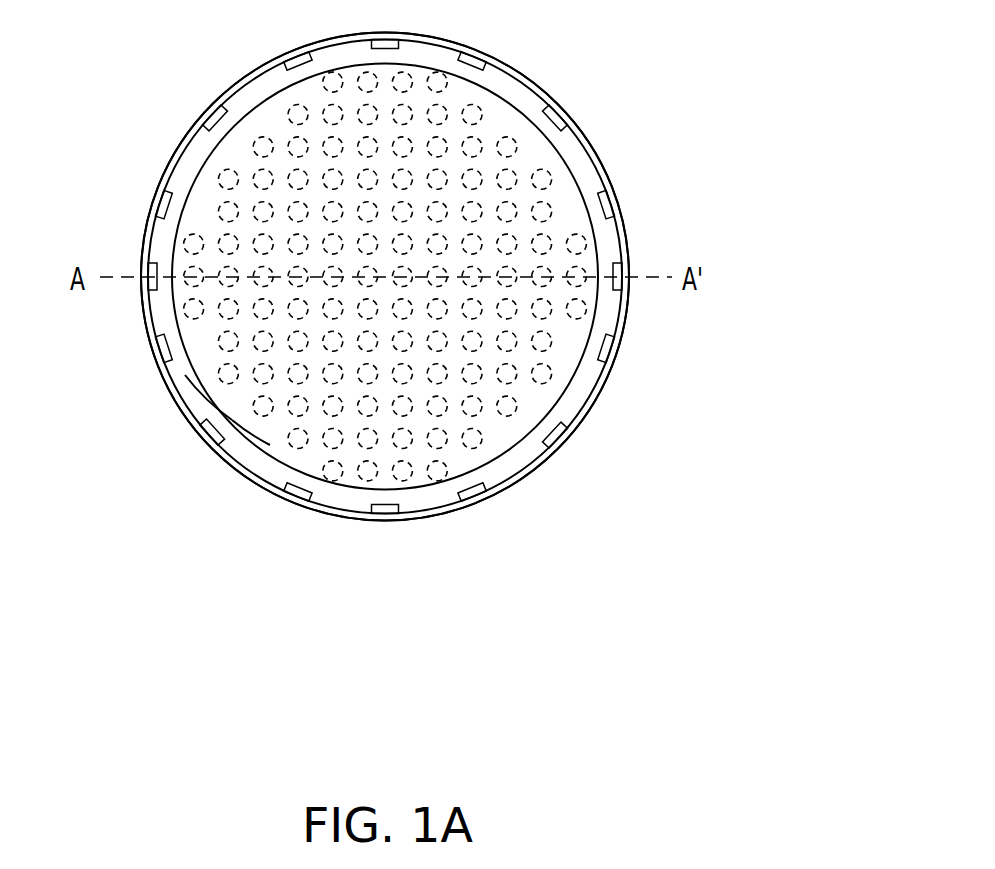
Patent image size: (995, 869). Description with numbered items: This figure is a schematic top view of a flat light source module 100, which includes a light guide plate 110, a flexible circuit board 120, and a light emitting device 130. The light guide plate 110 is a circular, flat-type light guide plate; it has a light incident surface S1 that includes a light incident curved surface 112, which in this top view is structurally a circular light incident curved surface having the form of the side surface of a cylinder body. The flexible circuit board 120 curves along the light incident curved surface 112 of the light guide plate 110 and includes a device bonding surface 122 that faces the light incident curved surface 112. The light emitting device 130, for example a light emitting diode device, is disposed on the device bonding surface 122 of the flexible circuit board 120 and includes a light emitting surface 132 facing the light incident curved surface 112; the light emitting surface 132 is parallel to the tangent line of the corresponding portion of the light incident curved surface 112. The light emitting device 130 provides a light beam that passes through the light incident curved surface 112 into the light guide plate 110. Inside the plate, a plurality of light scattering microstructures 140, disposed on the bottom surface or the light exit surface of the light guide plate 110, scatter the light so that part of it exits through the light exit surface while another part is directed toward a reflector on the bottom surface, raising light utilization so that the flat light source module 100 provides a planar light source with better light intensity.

The flat light source module 100 is at (642, 602).
The light guide plate 110 is at (280, 445).
The light incident curved surface 112 is at (253, 445).
The flexible circuit board 120 is at (590, 407).
The device bonding surface 122 is at (439, 488).
The light emitting device 130 is at (560, 437).
The light emitting surface 132 is at (590, 343).
The light scattering microstructures 140 is at (335, 472).
The light incident surface S1 is at (210, 398).